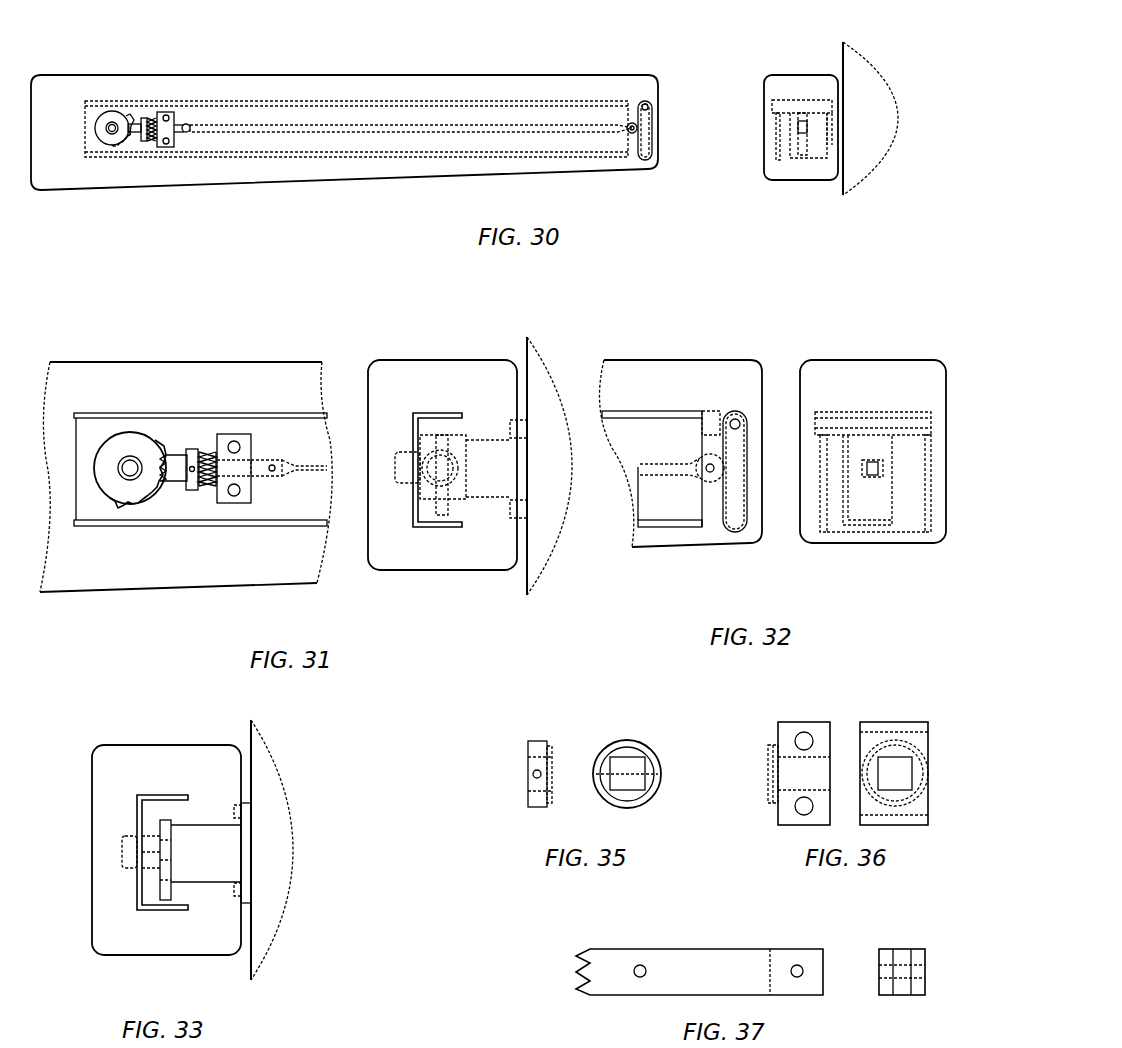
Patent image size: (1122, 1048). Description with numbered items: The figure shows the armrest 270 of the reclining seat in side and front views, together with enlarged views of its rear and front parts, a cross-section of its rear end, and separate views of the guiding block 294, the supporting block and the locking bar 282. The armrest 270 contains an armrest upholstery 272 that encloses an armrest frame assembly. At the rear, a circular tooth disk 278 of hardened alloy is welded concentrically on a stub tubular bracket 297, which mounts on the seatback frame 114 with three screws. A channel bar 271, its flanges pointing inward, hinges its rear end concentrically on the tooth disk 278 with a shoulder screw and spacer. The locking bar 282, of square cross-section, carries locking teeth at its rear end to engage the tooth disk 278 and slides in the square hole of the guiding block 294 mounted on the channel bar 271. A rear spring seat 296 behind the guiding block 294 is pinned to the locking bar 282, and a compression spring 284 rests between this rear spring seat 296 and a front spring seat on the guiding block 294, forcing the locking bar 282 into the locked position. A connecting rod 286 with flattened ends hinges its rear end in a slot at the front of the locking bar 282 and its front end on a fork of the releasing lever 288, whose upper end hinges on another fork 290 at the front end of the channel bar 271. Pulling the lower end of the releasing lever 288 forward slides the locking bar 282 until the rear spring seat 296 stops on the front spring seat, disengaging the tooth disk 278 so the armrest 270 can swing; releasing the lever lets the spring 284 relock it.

In FIG. 30, the seatback frame 114 is at (840, 63).
In FIG. 31, the seatback frame 114 is at (527, 572).
In FIG. 33, the seatback frame 114 is at (250, 960).
In FIG. 30, the armrest 270 is at (230, 60).
In FIG. 30, the channel bar 271 is at (265, 157).
In FIG. 31, the channel bar 271 is at (232, 527).
In FIG. 32, the channel bar 271 is at (655, 411).
In FIG. 33, the channel bar 271 is at (160, 795).
In FIG. 30, the armrest upholstery 272 is at (358, 75).
In FIG. 31, the armrest upholstery 272 is at (462, 360).
In FIG. 32, the armrest upholstery 272 is at (680, 360).
In FIG. 33, the armrest upholstery 272 is at (185, 745).
In FIG. 30, the circular tooth disk 278 is at (128, 118).
In FIG. 31, the circular tooth disk 278 is at (130, 432).
In FIG. 33, the circular tooth disk 278 is at (158, 892).
In FIG. 30, the locking bar 282 is at (136, 134).
In FIG. 31, the locking bar 282 is at (172, 483).
In FIG. 37, the locking bar 282 is at (600, 949).
In FIG. 31, the compression spring 284 is at (207, 452).
In FIG. 30, the connecting rod 286 is at (330, 134).
In FIG. 31, the connecting rod 286 is at (320, 472).
In FIG. 32, the connecting rod 286 is at (640, 475).
In FIG. 30, the releasing lever 288 is at (647, 160).
In FIG. 32, the releasing lever 288 is at (738, 533).
In FIG. 32, the fork 290 is at (717, 413).
In FIG. 30, the guiding block 294 is at (169, 148).
In FIG. 31, the guiding block 294 is at (236, 434).
In FIG. 36, the guiding block 294 is at (805, 722).
In FIG. 30, the rear spring seat 296 is at (145, 142).
In FIG. 31, the rear spring seat 296 is at (190, 450).
In FIG. 35, the rear spring seat 296 is at (530, 742).
In FIG. 31, the tubular bracket 297 is at (485, 502).
In FIG. 33, the tubular bracket 297 is at (207, 882).